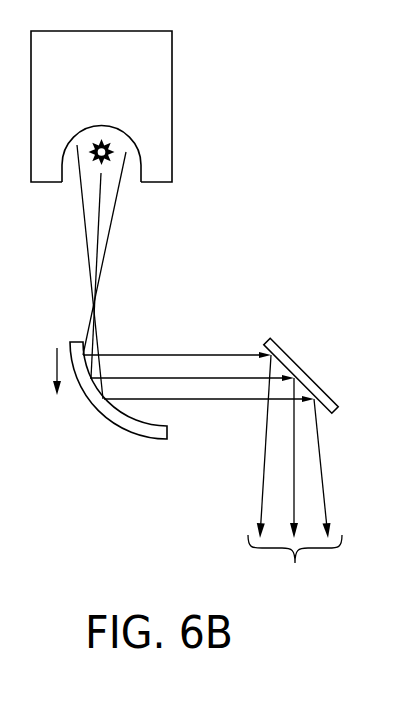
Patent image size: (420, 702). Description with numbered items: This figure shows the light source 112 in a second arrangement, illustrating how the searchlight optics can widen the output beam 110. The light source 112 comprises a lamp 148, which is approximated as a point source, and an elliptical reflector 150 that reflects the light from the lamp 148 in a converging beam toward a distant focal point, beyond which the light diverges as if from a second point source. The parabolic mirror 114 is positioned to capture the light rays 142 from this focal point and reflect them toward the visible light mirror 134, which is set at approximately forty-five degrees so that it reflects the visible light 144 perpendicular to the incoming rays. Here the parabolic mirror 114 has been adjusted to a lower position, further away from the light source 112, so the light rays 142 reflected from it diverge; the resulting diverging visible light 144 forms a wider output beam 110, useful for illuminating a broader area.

The light source 112 is at (172, 81).
The elliptical reflector 150 is at (141, 157).
The lamp 148 is at (96, 145).
The light rays 142 is at (110, 227).
The parabolic mirror 114 is at (104, 417).
The visible light mirror 134 is at (286, 352).
The visible light 144 is at (261, 503).
The output beam 110 is at (295, 565).